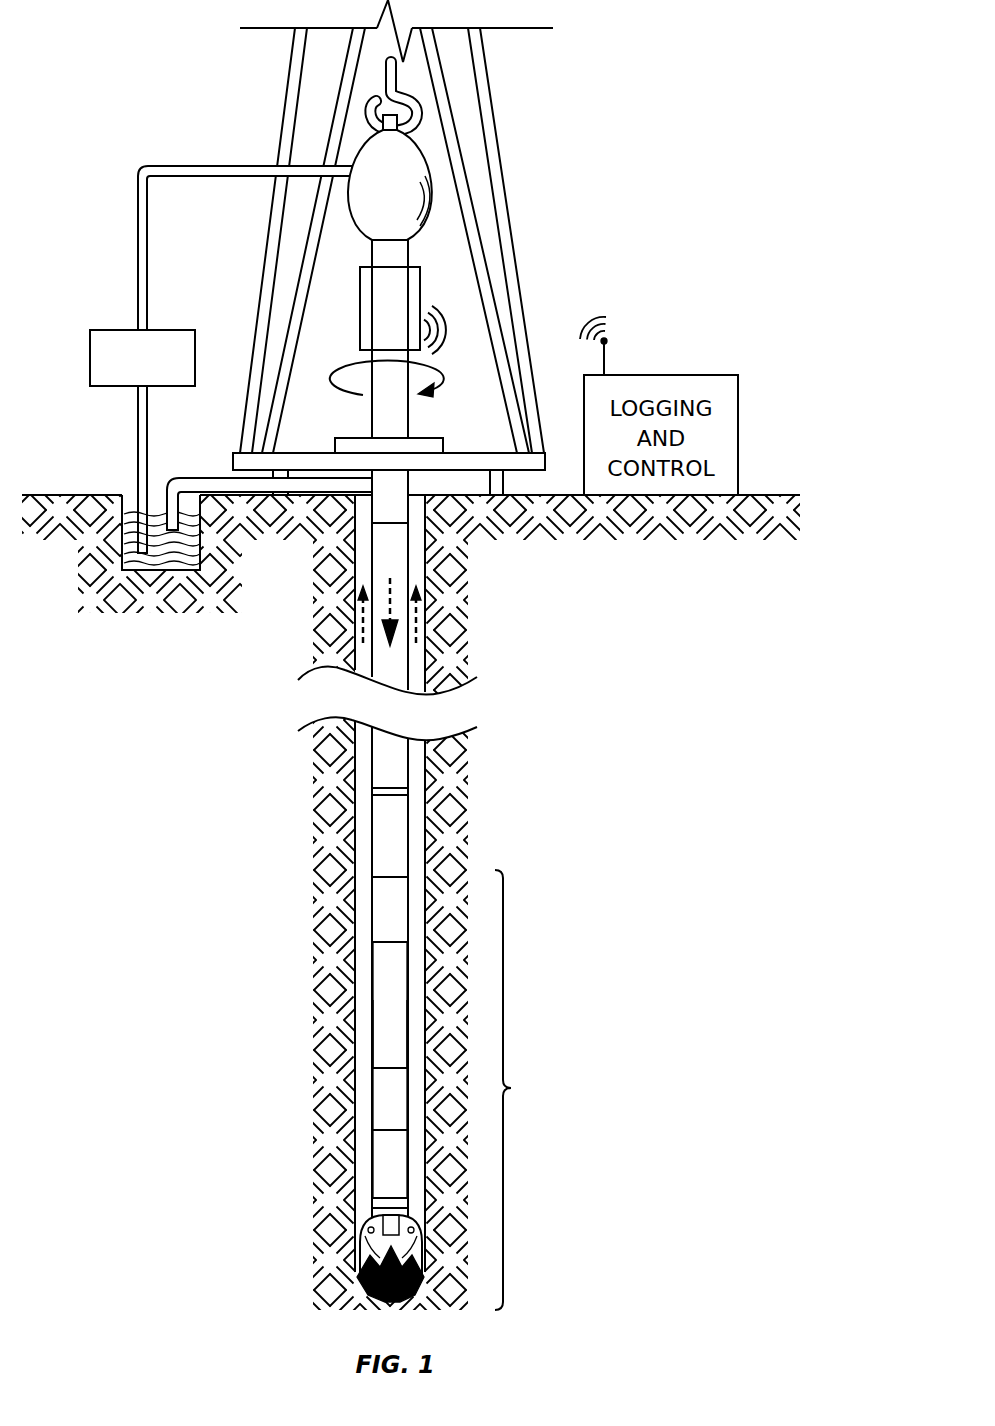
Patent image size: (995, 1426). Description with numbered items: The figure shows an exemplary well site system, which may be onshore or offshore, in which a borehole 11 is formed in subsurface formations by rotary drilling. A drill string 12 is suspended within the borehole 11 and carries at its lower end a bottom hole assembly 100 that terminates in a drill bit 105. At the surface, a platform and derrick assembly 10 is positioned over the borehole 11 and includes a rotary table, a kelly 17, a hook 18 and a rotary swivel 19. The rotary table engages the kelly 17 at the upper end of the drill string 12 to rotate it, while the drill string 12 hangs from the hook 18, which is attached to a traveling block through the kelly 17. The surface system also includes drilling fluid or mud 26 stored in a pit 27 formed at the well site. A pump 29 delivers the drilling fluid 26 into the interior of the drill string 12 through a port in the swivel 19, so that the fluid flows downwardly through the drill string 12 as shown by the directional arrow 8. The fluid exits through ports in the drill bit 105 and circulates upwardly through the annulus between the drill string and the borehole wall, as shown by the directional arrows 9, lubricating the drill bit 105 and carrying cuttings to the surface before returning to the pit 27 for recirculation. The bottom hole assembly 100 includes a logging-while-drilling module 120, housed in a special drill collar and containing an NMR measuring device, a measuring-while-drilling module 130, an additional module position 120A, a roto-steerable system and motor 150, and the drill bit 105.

The directional arrow 8 is at (392, 614).
The directional arrows 9 is at (420, 593).
The platform and derrick assembly 10 is at (548, 148).
The borehole 11 is at (416, 495).
The drill string 12 is at (386, 478).
The kelly 17 is at (390, 420).
The hook 18 is at (398, 77).
The rotary swivel 19 is at (370, 213).
The drilling fluid 26 is at (158, 553).
The pit 27 is at (128, 490).
The pump 29 is at (107, 387).
The bottom hole assembly 100 is at (513, 1088).
The drill bit 105 is at (365, 1250).
The logging-while-drilling module 120 is at (382, 973).
The measuring-while-drilling module 130 is at (372, 1035).
The additional LWD and/or MWD module 120A is at (382, 1098).
The roto-steerable system and motor 150 is at (382, 1172).